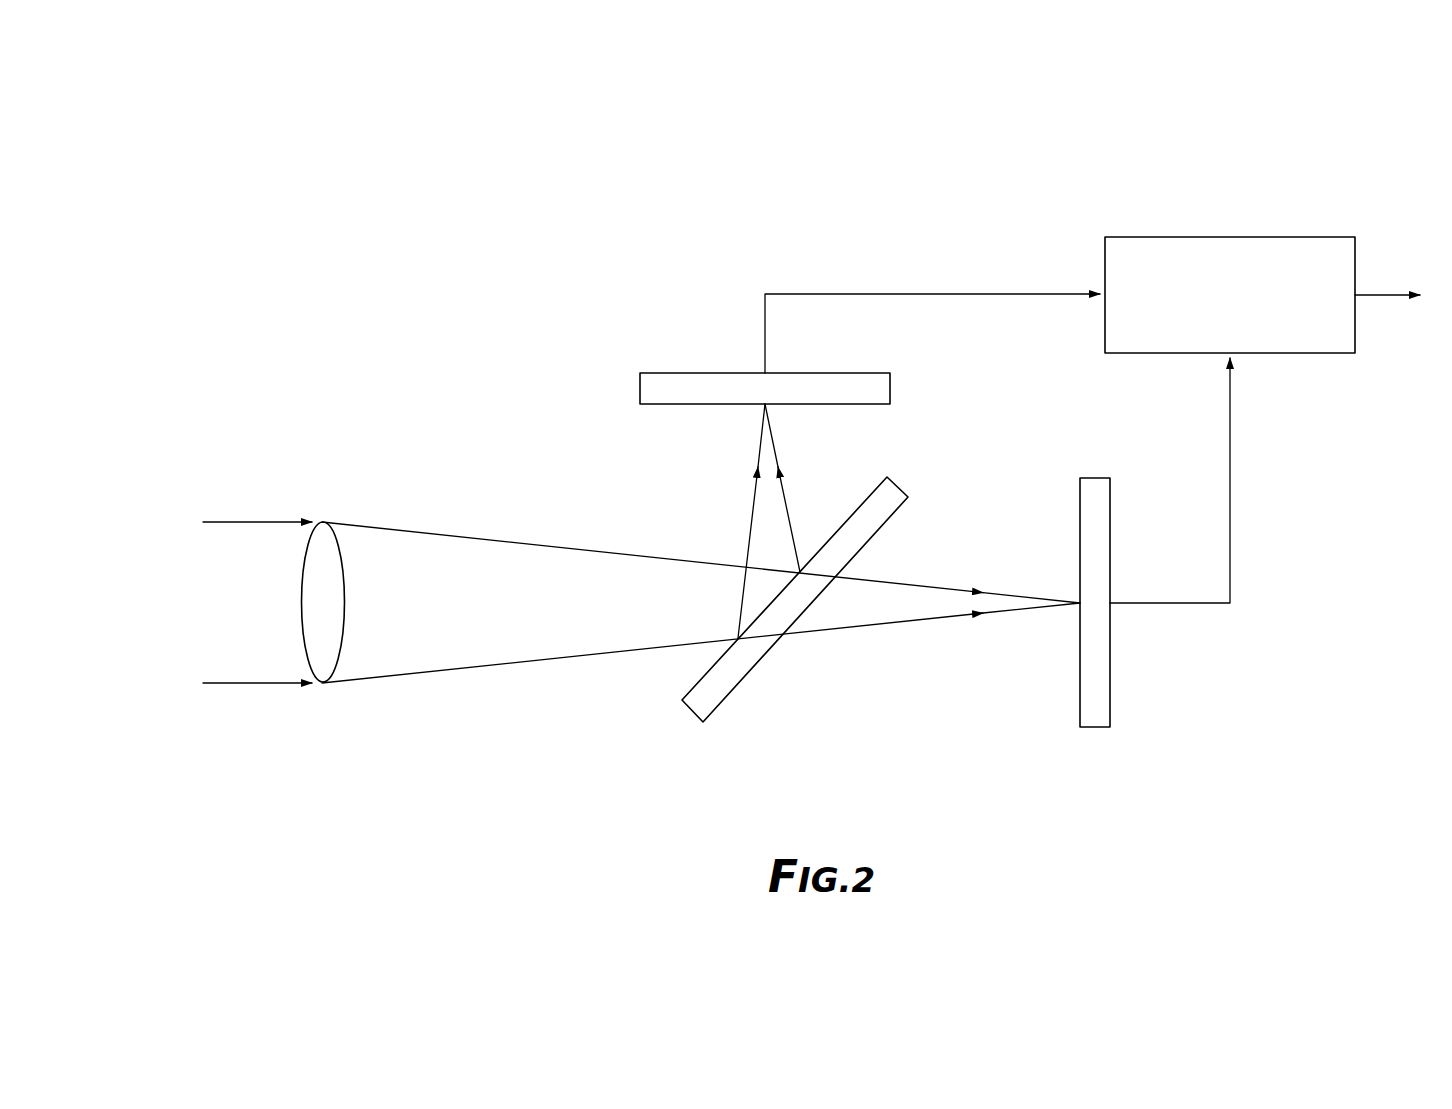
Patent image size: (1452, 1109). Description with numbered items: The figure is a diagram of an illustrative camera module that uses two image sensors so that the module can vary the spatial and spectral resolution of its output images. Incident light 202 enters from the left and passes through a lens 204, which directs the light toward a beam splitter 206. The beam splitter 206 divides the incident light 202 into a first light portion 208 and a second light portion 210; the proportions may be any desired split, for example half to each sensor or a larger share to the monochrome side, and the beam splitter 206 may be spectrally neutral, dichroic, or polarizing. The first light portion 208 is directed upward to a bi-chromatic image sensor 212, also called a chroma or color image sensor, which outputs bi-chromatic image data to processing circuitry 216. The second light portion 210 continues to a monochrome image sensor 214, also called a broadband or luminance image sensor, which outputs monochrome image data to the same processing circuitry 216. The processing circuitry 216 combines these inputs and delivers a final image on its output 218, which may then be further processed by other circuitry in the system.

The incident light 202 is at (228, 523).
The lens 204 is at (345, 592).
The beam splitter 206 is at (733, 688).
The first light portion 208 is at (787, 514).
The second light portion 210 is at (858, 580).
The bi-chromatic image sensor 212 is at (680, 372).
The monochrome image sensor 214 is at (1100, 727).
The processing circuitry 216 is at (1200, 237).
The output 218 is at (1397, 298).